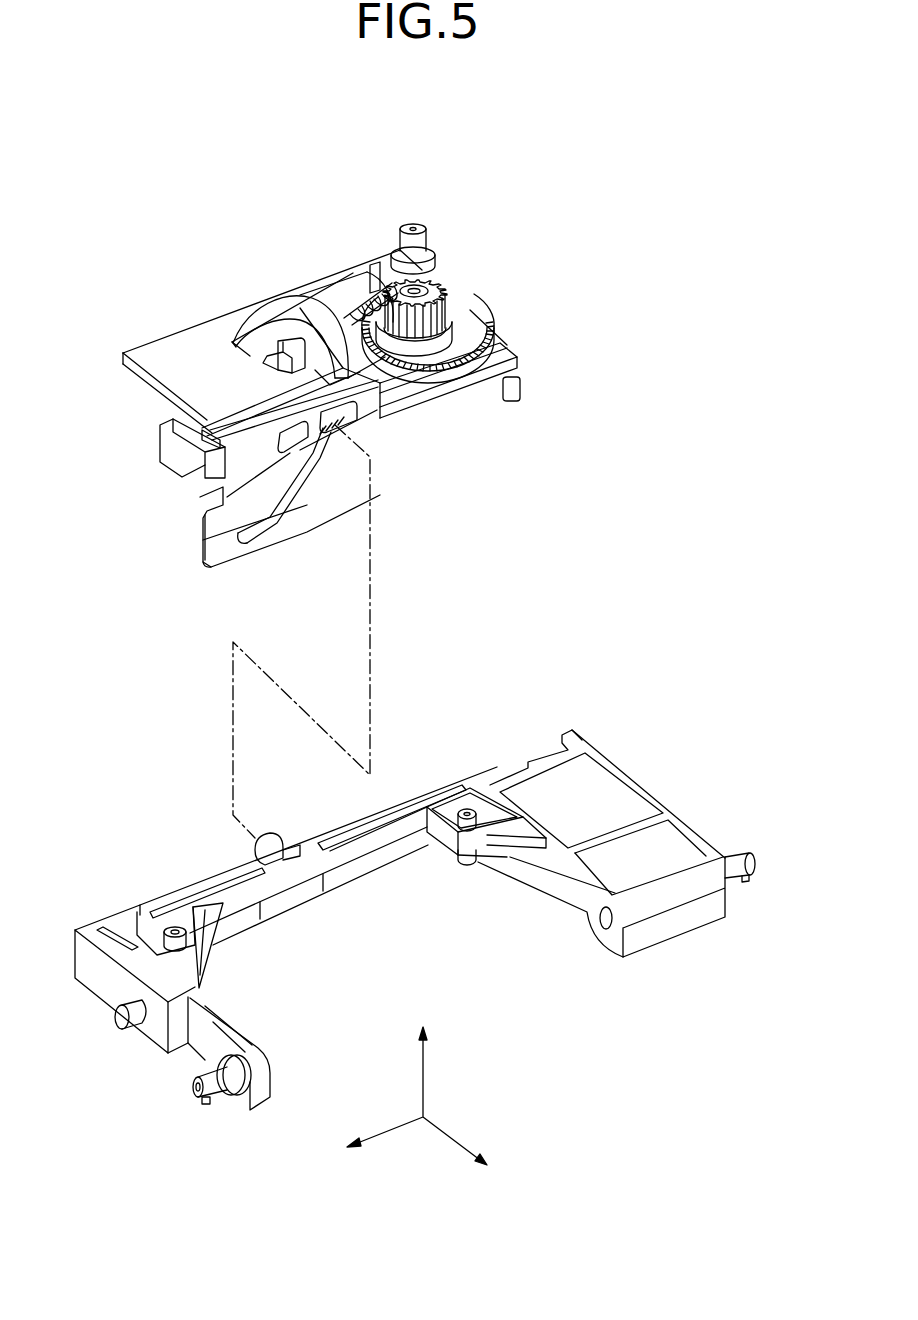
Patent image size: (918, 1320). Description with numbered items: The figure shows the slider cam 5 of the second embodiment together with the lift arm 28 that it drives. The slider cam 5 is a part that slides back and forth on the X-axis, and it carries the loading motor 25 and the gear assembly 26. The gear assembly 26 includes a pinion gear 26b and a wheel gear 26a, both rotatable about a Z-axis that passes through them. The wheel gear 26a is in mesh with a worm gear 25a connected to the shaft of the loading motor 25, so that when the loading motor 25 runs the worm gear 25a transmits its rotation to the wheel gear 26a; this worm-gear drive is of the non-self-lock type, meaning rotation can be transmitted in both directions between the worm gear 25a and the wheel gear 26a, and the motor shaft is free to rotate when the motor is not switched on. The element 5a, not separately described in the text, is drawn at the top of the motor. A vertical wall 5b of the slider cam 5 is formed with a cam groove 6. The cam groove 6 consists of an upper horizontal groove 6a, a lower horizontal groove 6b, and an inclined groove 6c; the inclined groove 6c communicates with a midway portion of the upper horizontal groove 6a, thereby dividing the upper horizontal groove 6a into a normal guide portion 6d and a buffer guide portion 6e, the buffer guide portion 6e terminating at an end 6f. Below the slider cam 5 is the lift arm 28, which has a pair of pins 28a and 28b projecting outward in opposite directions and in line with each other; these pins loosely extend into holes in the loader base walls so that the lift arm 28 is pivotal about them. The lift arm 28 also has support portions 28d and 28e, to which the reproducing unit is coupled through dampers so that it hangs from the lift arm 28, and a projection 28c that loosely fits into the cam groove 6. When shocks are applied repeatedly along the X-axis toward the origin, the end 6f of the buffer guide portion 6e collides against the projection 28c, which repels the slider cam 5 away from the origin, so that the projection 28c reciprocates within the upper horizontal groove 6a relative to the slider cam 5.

The slider cam 5 is at (389, 194).
The motor 5a is at (427, 225).
The vertical wall 5b is at (460, 400).
The cam groove 6 is at (214, 498).
The upper horizontal groove 6a is at (307, 433).
The lower horizontal groove 6b is at (256, 540).
The inclined groove 6c is at (290, 512).
The normal guide portion 6d is at (335, 422).
The buffer guide portion 6e is at (292, 455).
The end of the buffer guide portion 6f is at (205, 425).
The loading motor 25 is at (287, 308).
The worm gear 25a is at (357, 278).
The gear assembly 26 is at (486, 291).
The wheel gear 26a is at (462, 341).
The pinion gear 26b is at (447, 280).
The lift arm 28 is at (540, 731).
The pin 28a is at (738, 853).
The pin 28b is at (222, 1078).
The projection 28c is at (267, 850).
The support portion 28d is at (168, 927).
The support portion 28e is at (473, 810).